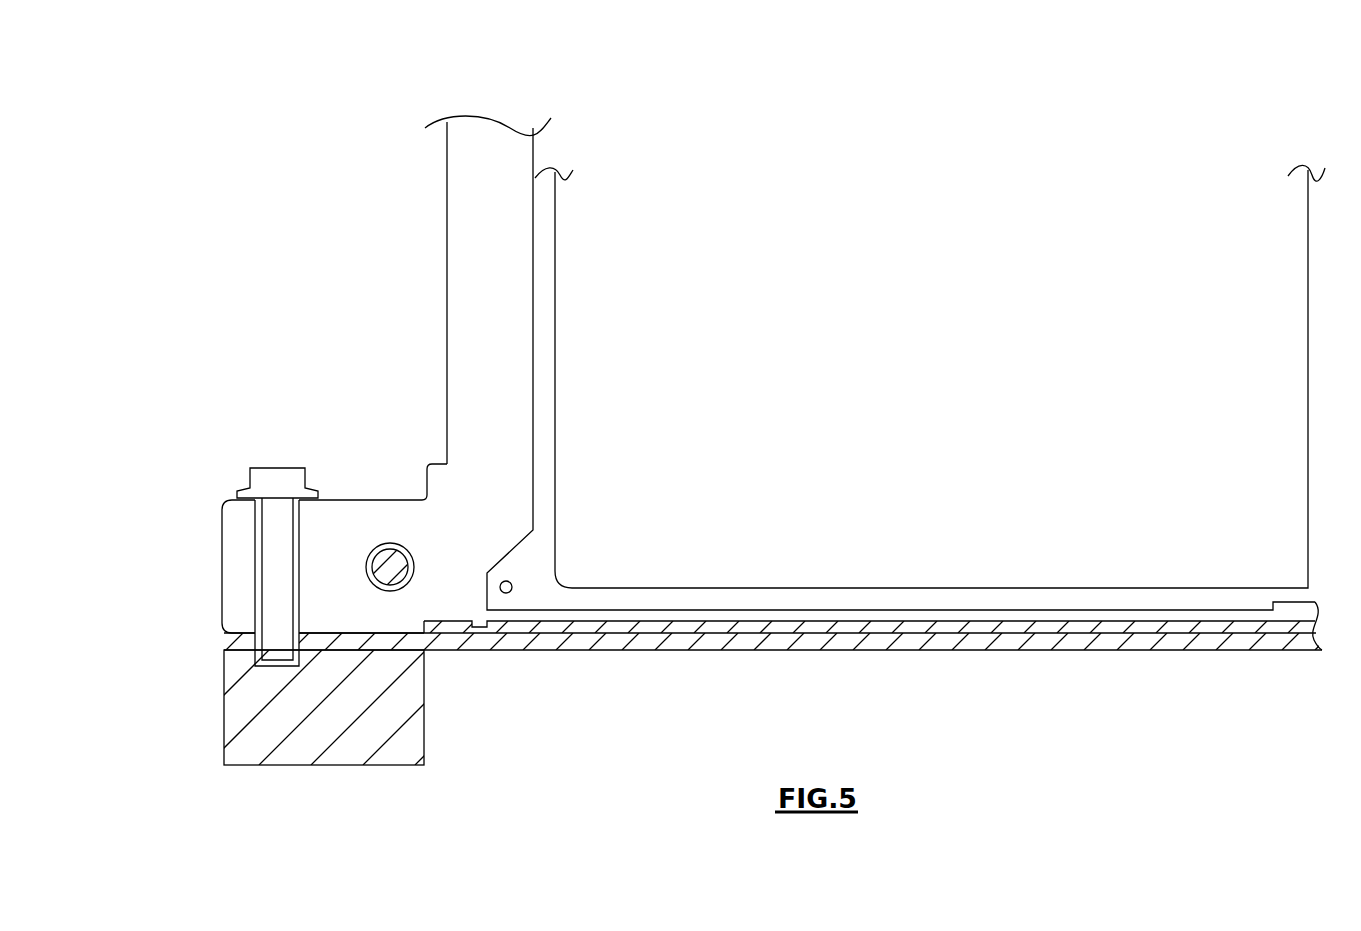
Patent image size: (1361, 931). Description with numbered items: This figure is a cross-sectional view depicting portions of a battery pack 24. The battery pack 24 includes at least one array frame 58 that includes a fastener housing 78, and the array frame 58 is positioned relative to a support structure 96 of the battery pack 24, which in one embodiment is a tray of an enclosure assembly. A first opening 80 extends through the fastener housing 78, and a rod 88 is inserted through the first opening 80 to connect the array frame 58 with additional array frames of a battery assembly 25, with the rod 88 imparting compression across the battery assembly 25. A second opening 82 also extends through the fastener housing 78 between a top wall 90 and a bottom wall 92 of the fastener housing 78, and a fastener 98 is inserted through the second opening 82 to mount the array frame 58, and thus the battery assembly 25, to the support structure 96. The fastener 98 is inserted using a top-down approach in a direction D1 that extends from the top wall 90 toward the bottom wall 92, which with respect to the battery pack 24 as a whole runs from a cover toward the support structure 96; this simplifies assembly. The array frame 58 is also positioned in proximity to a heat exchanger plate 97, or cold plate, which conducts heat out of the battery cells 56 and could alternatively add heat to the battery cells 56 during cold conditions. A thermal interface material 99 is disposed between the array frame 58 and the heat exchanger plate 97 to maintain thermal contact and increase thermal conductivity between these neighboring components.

The battery pack 24 is at (248, 90).
The battery assembly 25 is at (533, 105).
The battery cells 56 is at (902, 346).
The array frame 58 is at (415, 262).
The fastener housing 78 is at (352, 473).
The first opening 80 is at (415, 560).
The second opening 82 is at (300, 558).
The rod 88 is at (395, 572).
The top wall 90 is at (377, 498).
The bottom wall 92 is at (318, 633).
The support structure 96 is at (327, 735).
The heat exchanger plate 97 is at (1083, 643).
The fastener 98 is at (272, 487).
The thermal interface material 99 is at (985, 628).
The direction D1 is at (123, 440).